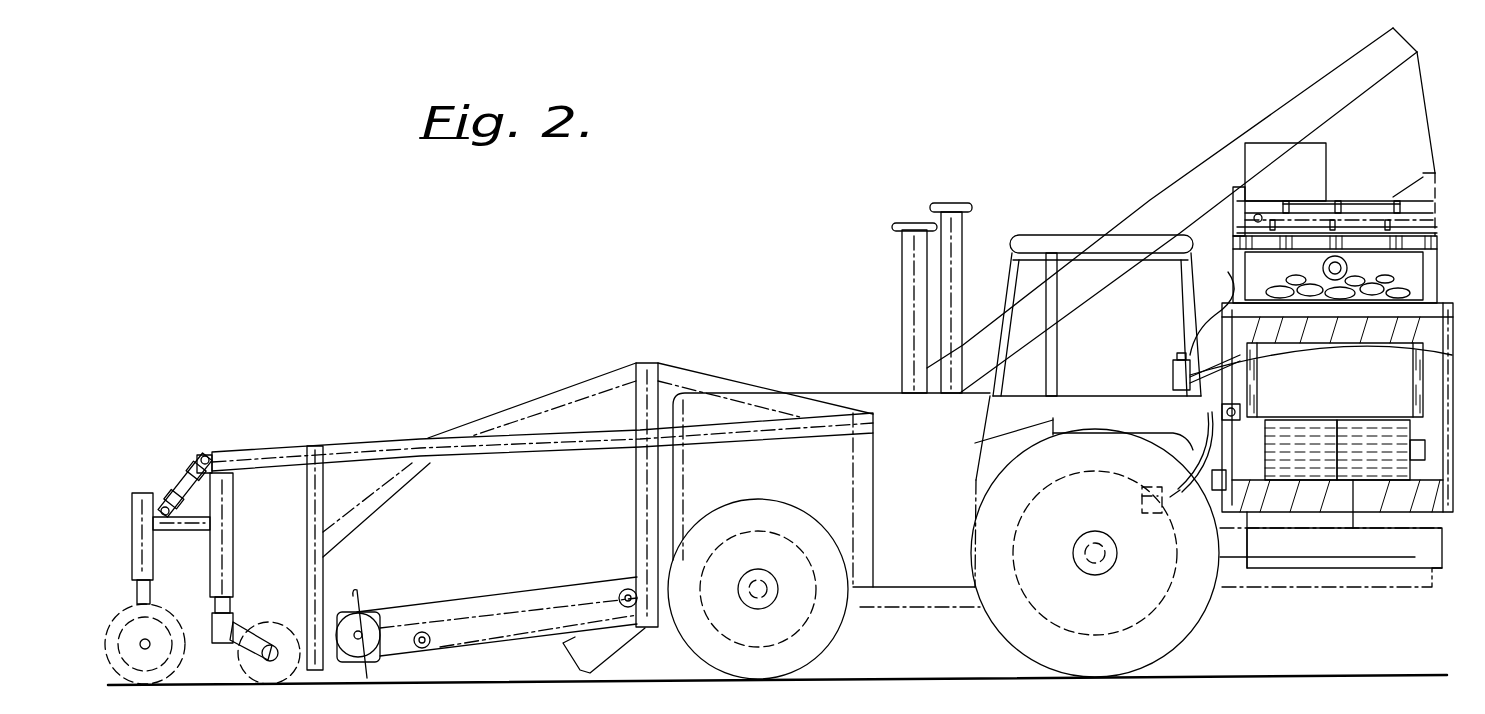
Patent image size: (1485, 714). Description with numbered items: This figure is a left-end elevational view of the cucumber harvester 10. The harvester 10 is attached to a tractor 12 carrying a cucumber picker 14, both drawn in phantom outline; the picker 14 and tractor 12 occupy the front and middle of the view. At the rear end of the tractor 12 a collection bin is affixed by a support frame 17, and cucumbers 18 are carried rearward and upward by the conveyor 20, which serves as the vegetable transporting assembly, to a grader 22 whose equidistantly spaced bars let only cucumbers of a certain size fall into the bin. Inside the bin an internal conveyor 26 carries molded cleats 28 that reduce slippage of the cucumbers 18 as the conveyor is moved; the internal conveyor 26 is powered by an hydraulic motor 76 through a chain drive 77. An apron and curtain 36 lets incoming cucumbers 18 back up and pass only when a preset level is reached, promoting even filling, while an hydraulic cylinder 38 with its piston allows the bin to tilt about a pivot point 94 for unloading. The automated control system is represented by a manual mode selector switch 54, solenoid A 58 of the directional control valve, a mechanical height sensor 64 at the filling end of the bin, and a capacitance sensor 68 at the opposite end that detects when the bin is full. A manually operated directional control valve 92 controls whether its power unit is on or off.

The cucumber harvester 10 is at (1072, 180).
The tractor 12 is at (859, 385).
The cucumber picker 14 is at (333, 440).
The support frame 17 is at (1355, 578).
The cucumbers 18 is at (1403, 297).
The conveyor 20 is at (1188, 170).
The grader 22 is at (1380, 197).
The internal conveyor 26 is at (1323, 463).
The cleats 28 is at (1387, 480).
The apron and curtain 36 is at (1348, 388).
The hydraulic cylinder 38 is at (1460, 500).
The manual mode selector switch 54 is at (1183, 365).
The solenoid A 58 is at (1228, 410).
The mechanical height sensor 64 is at (1430, 243).
The capacitance sensor 68 is at (1334, 358).
The hydraulic motor 76 is at (1208, 456).
The chain drive 77 is at (1216, 482).
The manually operated directional control valve 92 is at (1156, 515).
The pivot point 94 is at (1212, 299).